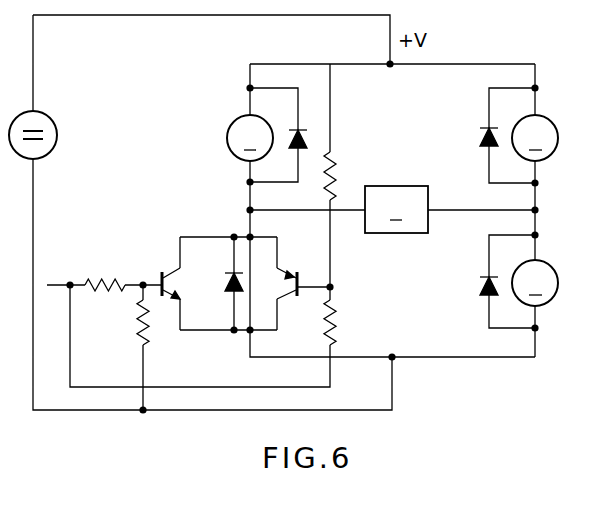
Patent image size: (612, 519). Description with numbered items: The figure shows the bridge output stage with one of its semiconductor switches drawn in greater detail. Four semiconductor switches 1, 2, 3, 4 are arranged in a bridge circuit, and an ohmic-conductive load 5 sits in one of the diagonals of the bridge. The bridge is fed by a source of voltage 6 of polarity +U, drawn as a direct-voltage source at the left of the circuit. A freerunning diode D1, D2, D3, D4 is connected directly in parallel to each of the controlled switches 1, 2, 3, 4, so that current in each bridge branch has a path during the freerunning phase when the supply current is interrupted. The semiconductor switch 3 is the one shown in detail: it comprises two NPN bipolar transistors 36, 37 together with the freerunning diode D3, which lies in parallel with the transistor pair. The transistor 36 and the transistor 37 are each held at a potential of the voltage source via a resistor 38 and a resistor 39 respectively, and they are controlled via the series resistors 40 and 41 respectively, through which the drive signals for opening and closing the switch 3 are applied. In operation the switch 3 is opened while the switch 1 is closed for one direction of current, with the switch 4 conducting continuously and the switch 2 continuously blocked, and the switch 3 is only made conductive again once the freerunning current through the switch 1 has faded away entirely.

The source of voltage 6 is at (57, 133).
The semiconductor switch 1 is at (250, 138).
The semiconductor switch 2 is at (535, 138).
The semiconductor switch 4 is at (535, 283).
The ohmic-conductive load 5 is at (392, 209).
The semiconductor switch 3 is at (168, 230).
The NPN bipolar transistor 36 is at (160, 281).
The NPN bipolar transistor 37 is at (298, 272).
The resistor 38 is at (137, 331).
The resistor 39 is at (105, 279).
The series resistor 40 is at (338, 331).
The series resistor 41 is at (338, 172).
The freerunning diode D1 is at (295, 128).
The freerunning diode D2 is at (483, 137).
The freerunning diode D3 is at (240, 273).
The freerunning diode D4 is at (482, 283).